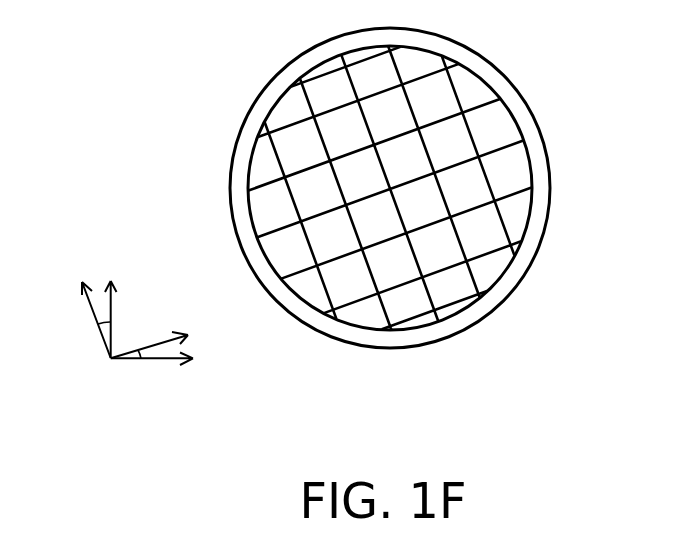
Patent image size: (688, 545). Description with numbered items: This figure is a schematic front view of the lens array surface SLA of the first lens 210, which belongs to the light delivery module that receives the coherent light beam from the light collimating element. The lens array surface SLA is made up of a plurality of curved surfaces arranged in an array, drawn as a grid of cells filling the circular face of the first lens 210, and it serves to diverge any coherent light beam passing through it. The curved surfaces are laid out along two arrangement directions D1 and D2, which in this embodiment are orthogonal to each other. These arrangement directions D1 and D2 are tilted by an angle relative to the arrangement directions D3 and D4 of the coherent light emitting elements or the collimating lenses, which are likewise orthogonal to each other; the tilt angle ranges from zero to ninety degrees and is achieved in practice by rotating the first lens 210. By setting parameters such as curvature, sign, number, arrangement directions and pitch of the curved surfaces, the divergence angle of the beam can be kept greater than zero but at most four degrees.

The first lens 210 is at (582, 387).
The lens array surface SLA is at (475, 188).
The arrangement direction D1 is at (80, 301).
The arrangement direction D2 is at (165, 328).
The arrangement direction D3 is at (118, 297).
The arrangement direction D4 is at (169, 361).